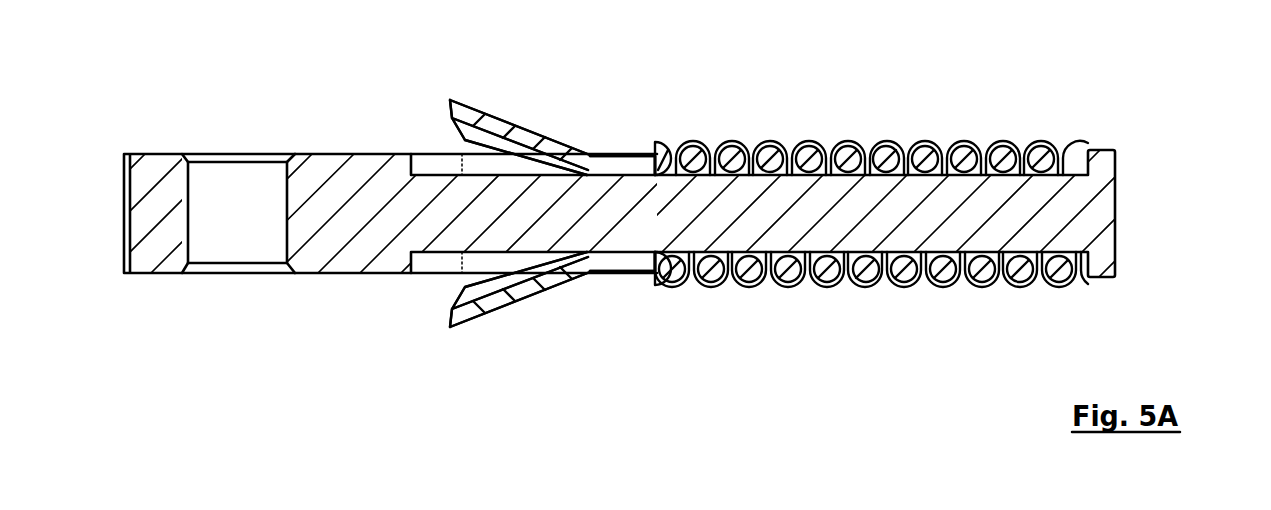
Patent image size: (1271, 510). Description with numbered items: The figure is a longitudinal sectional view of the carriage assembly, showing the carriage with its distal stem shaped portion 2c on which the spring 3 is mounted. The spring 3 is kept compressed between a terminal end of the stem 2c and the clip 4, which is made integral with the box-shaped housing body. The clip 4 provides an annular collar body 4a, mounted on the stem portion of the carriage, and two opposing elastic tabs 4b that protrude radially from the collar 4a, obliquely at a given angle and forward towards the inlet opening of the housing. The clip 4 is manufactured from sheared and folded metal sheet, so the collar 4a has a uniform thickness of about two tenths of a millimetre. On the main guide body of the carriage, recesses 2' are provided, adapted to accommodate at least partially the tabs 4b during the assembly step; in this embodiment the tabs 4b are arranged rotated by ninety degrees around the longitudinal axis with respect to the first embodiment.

The recess 2' is at (522, 228).
The distal stem shaped portion 2c is at (853, 237).
The spring 3 is at (763, 147).
The clip 4 is at (616, 126).
The annular collar body 4a is at (637, 274).
The elastic tab 4b is at (488, 127).